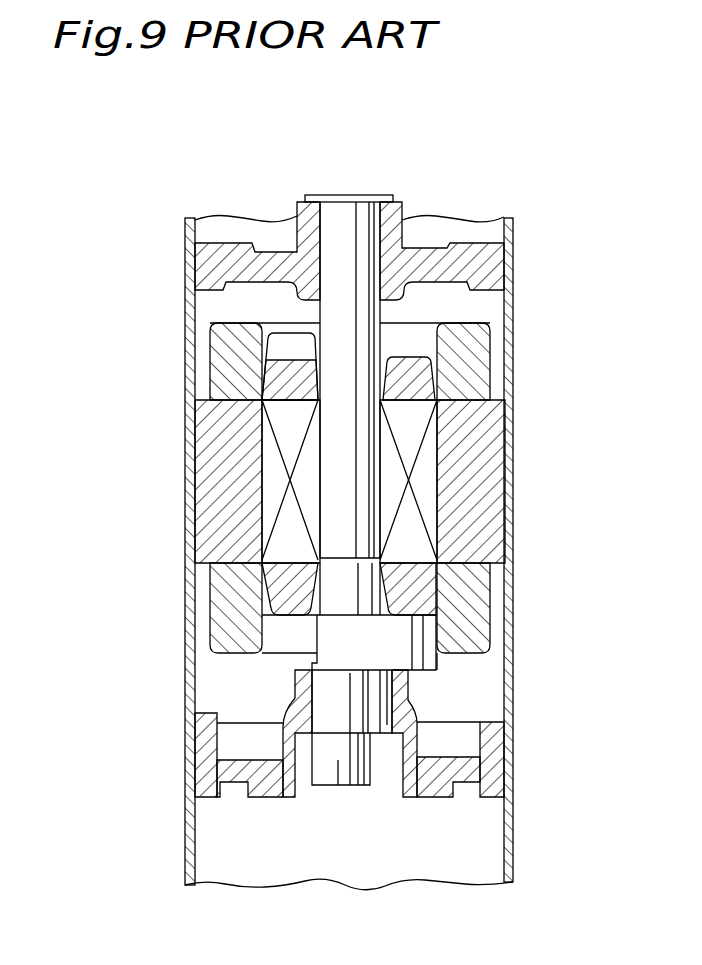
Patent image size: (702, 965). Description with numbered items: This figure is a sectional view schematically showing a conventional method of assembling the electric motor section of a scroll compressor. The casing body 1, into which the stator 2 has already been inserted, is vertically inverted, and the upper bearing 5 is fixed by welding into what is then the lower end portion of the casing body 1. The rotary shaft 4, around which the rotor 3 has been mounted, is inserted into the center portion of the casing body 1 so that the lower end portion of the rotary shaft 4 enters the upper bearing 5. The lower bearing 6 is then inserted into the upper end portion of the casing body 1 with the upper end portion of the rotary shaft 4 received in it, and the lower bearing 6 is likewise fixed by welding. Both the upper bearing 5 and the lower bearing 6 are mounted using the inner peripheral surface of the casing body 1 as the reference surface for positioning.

The casing body 1 is at (513, 689).
The stator 2 is at (482, 475).
The rotor 3 is at (268, 473).
The rotary shaft 4 is at (340, 367).
The upper bearing 5 is at (277, 797).
The lower bearing 6 is at (237, 257).